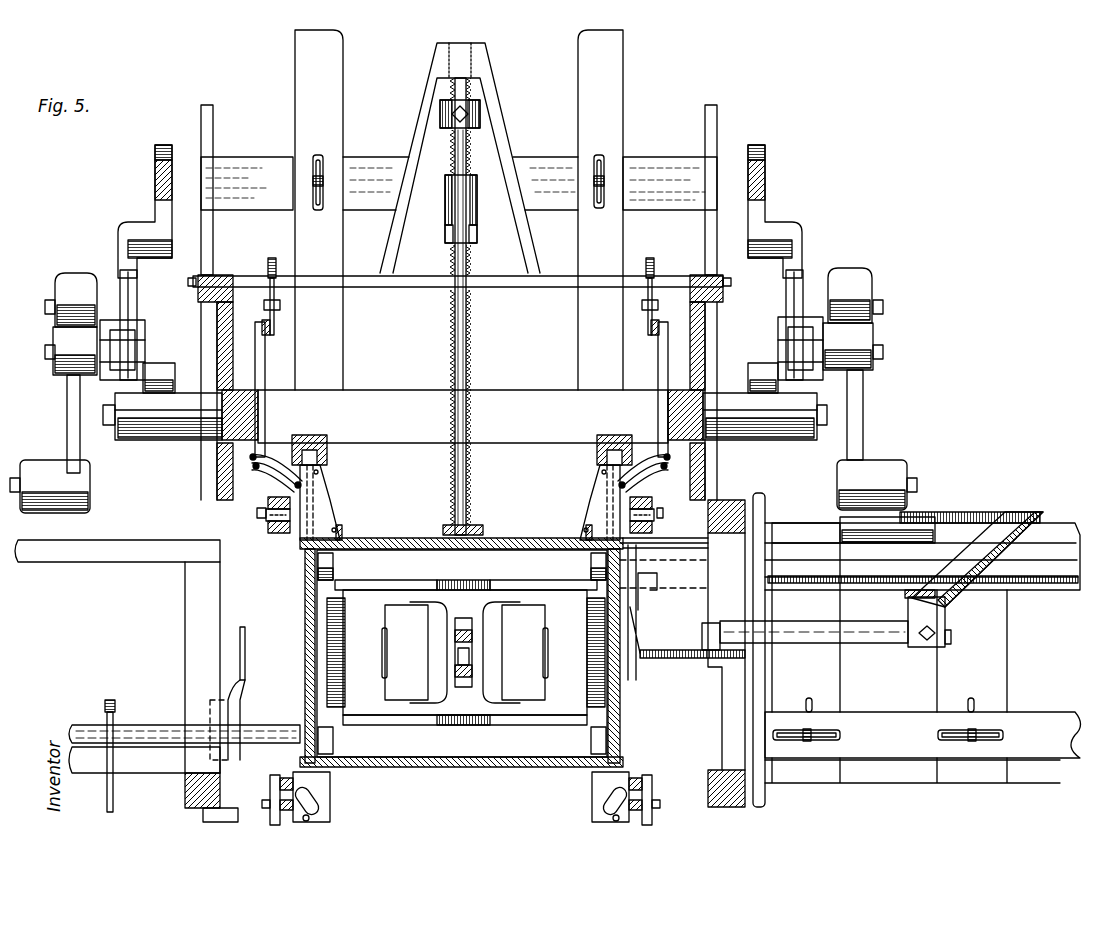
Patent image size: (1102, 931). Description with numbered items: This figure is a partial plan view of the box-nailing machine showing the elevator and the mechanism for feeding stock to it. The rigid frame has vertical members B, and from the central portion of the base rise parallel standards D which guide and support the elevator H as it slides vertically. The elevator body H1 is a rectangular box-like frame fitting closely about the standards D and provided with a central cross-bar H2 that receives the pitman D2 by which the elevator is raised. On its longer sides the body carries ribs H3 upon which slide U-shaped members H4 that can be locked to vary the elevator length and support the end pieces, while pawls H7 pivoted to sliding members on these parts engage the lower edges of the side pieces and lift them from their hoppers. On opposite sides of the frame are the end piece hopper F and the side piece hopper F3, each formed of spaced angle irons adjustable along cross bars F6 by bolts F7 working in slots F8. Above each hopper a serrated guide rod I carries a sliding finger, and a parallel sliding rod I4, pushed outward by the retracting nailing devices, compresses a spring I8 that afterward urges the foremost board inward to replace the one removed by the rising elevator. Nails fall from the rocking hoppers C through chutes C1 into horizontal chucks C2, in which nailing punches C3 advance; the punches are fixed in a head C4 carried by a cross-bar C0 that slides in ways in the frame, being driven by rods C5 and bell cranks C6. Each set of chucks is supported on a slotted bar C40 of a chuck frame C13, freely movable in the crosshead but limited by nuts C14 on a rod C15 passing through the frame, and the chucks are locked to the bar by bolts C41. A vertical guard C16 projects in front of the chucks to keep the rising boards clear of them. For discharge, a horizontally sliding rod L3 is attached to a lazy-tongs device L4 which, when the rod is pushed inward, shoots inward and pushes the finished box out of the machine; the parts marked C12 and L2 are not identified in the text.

The vertical members of frame B is at (500, 136).
The rocking nail hopper C is at (145, 358).
The cross-bar C0 is at (188, 456).
The nail chute C1 is at (668, 468).
The horizontal chuck C2 is at (460, 502).
The nailing rod C3 is at (612, 472).
The head C4 is at (330, 452).
The rod C5 is at (125, 290).
The bell crank C6 is at (73, 388).
The rod C12 is at (658, 356).
The chuck frame C13 is at (330, 775).
The nut C14 is at (280, 308).
The rod C15 is at (270, 262).
The vertical guard C16 is at (340, 530).
The slotted bar C40 is at (655, 506).
The bolt C41 is at (660, 516).
The standard D is at (420, 660).
The pitman D2 is at (463, 620).
The end piece hopper F is at (923, 735).
The side piece hopper F3 is at (330, 368).
The cross bar F6 is at (960, 688).
The bolt F7 is at (654, 464).
The slot F8 is at (318, 160).
The elevator H is at (462, 653).
The elevator body H1 is at (552, 712).
The central cross-bar H2 is at (475, 680).
The rib H3 is at (463, 587).
The U-shaped member H4 is at (364, 588).
The pawl H7 is at (305, 653).
The guide rod I is at (452, 352).
The sliding rod I4 is at (457, 148).
The spring I8 is at (478, 96).
The diagonal bar L2 is at (1020, 523).
The horizontally sliding rod L3 is at (890, 641).
The lazy-tongs device L4 is at (686, 660).